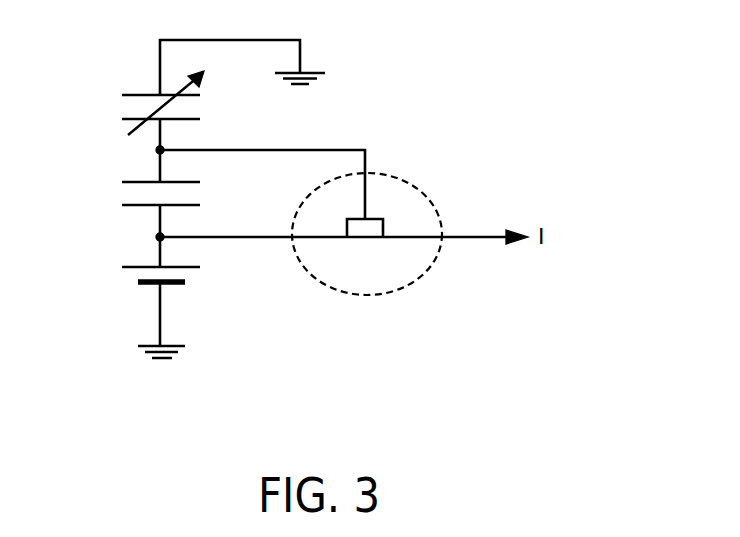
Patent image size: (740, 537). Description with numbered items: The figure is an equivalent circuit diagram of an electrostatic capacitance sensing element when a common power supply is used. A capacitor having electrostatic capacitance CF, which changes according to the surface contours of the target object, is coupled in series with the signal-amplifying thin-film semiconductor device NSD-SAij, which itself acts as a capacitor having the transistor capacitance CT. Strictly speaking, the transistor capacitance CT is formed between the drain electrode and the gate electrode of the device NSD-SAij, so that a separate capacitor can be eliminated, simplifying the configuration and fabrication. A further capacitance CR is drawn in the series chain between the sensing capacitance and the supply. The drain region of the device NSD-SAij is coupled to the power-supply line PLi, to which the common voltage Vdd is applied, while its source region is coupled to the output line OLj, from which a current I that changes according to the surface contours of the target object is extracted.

The electrostatic capacitance of sensing capacitor CF is at (137, 103).
The reset capacitor CR is at (135, 198).
The common power supply voltage Vdd is at (136, 272).
The transistor capacitance CT is at (366, 253).
The MIS type thin-film semiconductor device to amplify signal NSD-SAij is at (367, 268).
The power-supply line PLi is at (222, 237).
The output line OLj is at (468, 237).